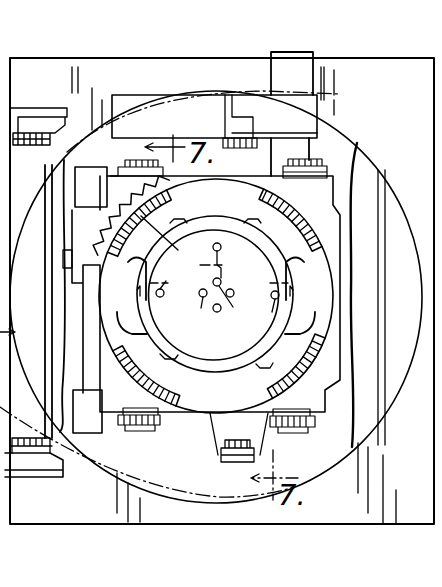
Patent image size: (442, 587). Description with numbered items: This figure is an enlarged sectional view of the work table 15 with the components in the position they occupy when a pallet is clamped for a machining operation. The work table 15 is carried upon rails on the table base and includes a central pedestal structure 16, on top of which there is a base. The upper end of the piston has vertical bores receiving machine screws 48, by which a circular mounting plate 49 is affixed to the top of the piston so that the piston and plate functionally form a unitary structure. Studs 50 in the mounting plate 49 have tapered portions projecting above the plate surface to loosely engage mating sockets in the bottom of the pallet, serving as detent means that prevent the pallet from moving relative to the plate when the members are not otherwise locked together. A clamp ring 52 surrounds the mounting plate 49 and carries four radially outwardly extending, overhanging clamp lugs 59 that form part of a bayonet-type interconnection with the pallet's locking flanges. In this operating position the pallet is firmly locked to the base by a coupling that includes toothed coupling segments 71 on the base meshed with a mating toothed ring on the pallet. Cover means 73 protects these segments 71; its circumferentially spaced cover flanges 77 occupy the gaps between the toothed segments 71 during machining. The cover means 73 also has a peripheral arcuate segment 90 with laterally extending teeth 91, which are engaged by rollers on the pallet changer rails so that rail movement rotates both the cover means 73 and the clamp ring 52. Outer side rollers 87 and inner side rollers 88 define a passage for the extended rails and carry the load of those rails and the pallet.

The work table 15 is at (389, 51).
The central pedestal structure 16 is at (165, 418).
The machine screws 48 is at (215, 311).
The circular mounting plate 49 is at (219, 295).
The studs 50 is at (287, 359).
The clamp ring 52 is at (238, 226).
The clamp lugs 59 is at (216, 296).
The toothed coupling segments 71 is at (108, 262).
The cover means 73 is at (216, 296).
The cover flanges 77 is at (210, 178).
The outer side rollers 87 is at (32, 133).
The inner side rollers 88 is at (125, 160).
The peripheral arcuate segment 90 is at (150, 215).
The laterally extending teeth 91 is at (96, 187).